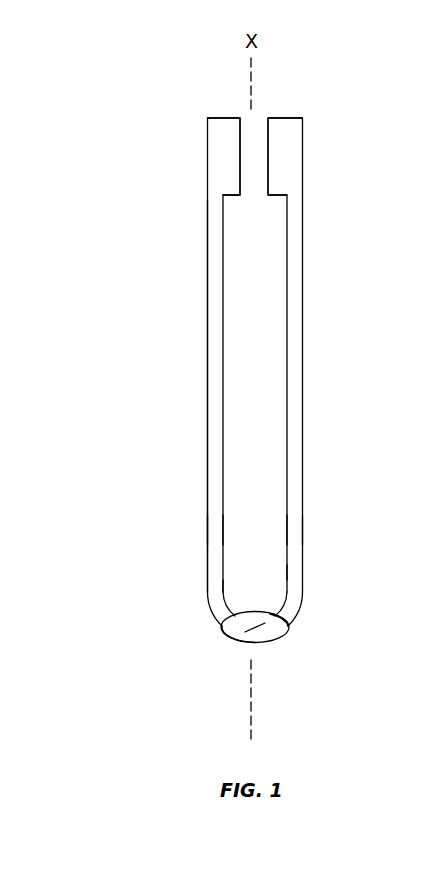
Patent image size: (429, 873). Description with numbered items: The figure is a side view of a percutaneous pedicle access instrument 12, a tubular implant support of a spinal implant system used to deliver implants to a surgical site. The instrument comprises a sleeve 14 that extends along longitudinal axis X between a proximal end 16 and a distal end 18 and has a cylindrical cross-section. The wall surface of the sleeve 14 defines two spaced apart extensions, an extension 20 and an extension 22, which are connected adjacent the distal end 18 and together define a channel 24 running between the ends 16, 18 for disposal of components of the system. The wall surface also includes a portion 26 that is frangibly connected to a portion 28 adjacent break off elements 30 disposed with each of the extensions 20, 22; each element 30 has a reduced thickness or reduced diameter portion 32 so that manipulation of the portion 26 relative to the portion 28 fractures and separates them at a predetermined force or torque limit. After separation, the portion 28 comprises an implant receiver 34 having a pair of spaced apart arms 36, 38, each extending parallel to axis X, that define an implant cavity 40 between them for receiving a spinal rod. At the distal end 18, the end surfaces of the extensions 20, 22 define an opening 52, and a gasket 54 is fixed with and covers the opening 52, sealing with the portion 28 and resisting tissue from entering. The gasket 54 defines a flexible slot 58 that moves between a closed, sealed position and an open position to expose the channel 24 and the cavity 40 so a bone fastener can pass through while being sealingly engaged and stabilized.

The percutaneous pedicle access instrument 12 is at (108, 289).
The sleeve 14 is at (208, 195).
The proximal end 16 is at (302, 153).
The distal end 18 is at (300, 608).
The extension 20 is at (208, 380).
The extension 22 is at (302, 412).
The channel 24 is at (260, 350).
The portion 26 is at (208, 410).
The portion 28 is at (302, 595).
The break off elements 30 is at (210, 528).
The reduced thickness and/or reduced diameter portion 32 is at (210, 528).
The implant receiver 34 is at (175, 600).
The arm 36 is at (223, 598).
The arm 38 is at (285, 575).
The implant cavity 40 is at (240, 592).
The opening 52 is at (222, 628).
The gasket 54 is at (288, 625).
The flexible slot 58 is at (257, 624).